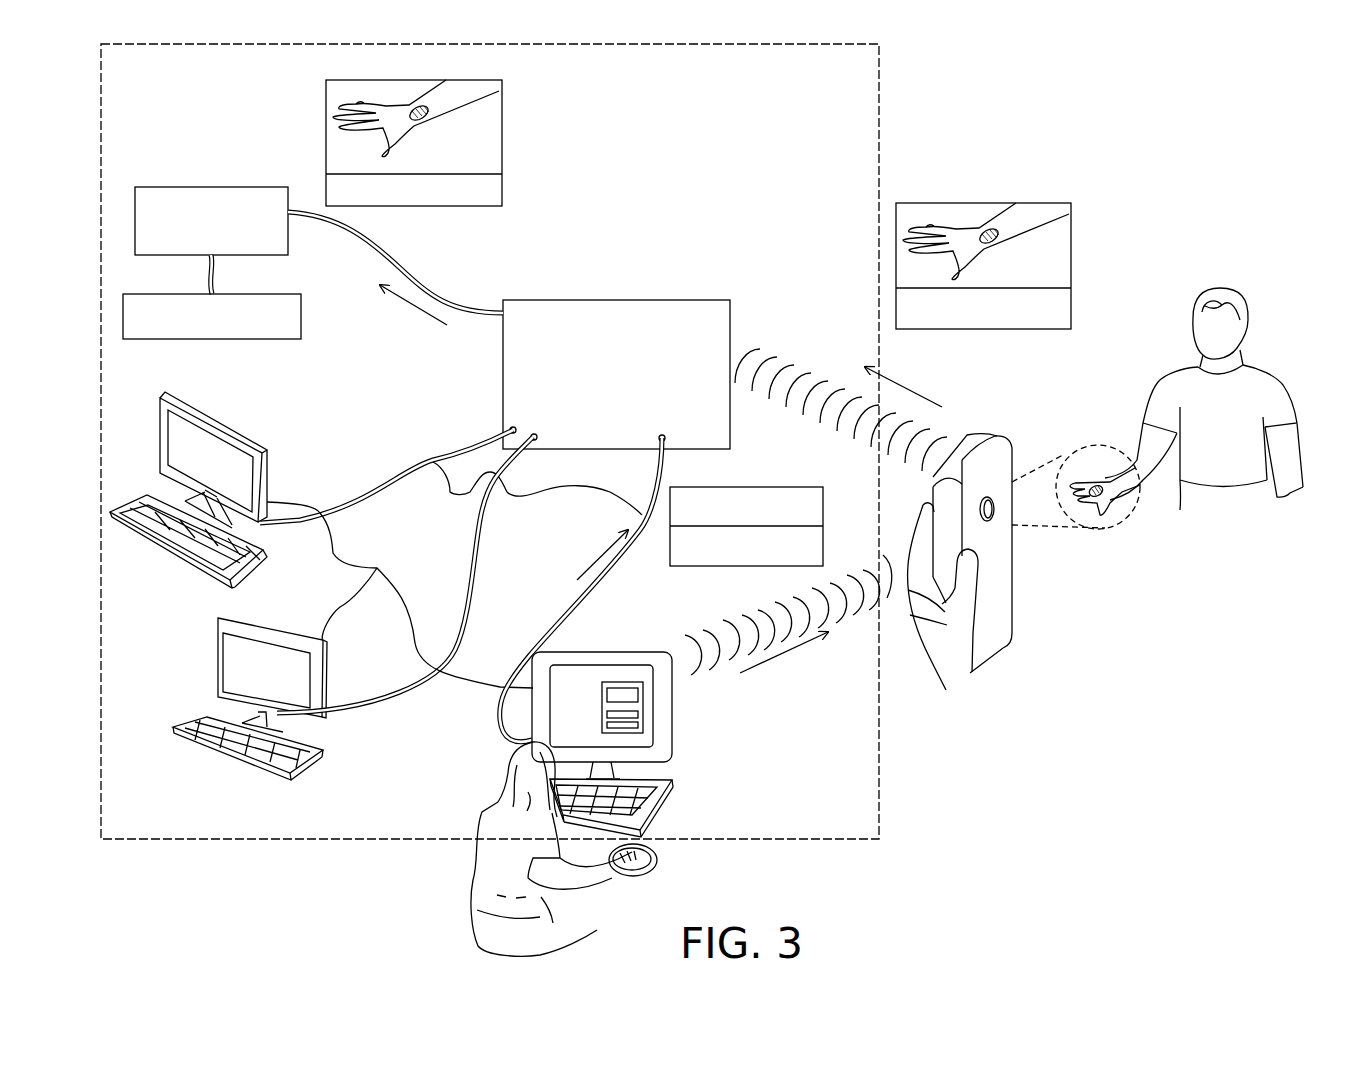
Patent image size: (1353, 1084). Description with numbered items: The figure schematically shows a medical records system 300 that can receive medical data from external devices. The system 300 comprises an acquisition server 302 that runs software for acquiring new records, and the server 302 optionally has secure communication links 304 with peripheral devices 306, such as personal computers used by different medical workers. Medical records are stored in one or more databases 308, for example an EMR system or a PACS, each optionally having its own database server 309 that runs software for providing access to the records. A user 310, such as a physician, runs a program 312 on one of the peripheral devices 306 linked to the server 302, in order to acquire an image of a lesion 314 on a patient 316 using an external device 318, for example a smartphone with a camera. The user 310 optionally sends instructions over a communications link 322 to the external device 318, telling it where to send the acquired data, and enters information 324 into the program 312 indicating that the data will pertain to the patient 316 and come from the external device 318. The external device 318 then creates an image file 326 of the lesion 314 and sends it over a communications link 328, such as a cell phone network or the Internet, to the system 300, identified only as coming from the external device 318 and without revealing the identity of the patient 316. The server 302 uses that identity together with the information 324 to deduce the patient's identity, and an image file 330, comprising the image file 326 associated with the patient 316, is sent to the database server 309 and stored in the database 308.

The medical records system 300 is at (880, 140).
The acquisition server 302 is at (509, 330).
The secure communication links 304 is at (451, 476).
The peripheral devices 306 is at (400, 575).
The database 308 is at (248, 294).
The database server 309 is at (236, 188).
The user 310 is at (468, 900).
The program 312 is at (643, 733).
The lesion 314 is at (1096, 448).
The patient 316 is at (1163, 380).
The external device 318 is at (1000, 640).
The communications link 322 is at (851, 612).
The information 324 is at (770, 485).
The image file 326 is at (1013, 204).
The communications link 328 is at (760, 348).
The image file 330 is at (447, 82).